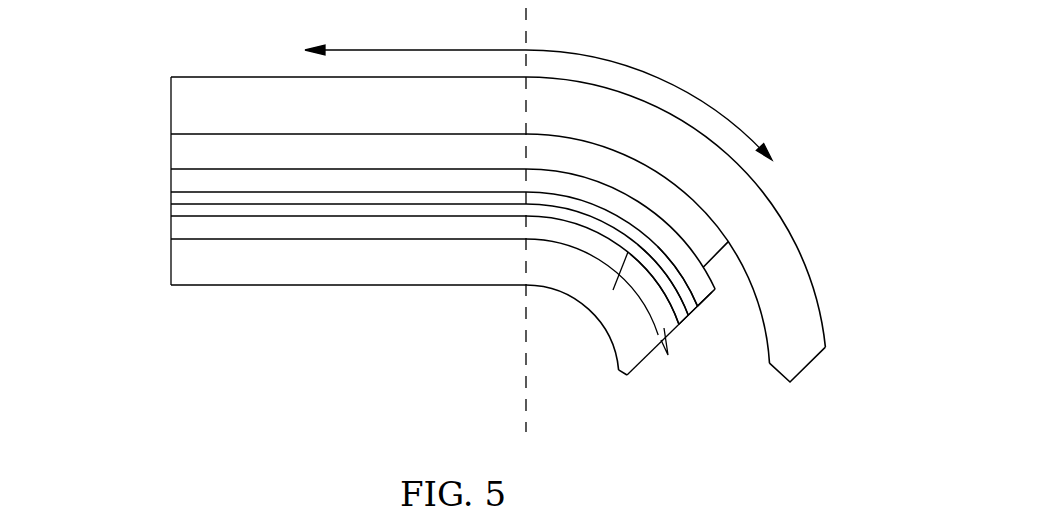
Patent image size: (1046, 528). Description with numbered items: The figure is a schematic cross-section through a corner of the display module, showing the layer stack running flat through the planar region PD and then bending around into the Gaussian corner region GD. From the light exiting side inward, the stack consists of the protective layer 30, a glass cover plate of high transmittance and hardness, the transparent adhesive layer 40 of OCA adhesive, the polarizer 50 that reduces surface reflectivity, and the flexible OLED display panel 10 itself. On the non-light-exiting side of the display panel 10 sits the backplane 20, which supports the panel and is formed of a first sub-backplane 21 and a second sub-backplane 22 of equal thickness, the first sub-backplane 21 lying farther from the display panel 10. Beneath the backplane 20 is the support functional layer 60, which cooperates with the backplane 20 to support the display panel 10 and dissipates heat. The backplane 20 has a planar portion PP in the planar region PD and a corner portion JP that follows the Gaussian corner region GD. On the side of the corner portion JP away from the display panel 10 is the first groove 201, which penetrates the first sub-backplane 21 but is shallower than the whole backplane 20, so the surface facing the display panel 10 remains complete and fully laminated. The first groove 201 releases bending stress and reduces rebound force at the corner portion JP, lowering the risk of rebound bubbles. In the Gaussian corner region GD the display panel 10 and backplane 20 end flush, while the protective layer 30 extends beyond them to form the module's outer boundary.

The display panel 10 is at (190, 201).
The backplane 20 is at (740, 398).
The first sub-backplane 21 is at (673, 318).
The second sub-backplane 22 is at (690, 323).
The protective layer 30 is at (218, 110).
The transparent adhesive layer 40 is at (218, 162).
The polarizer 50 is at (218, 188).
The support functional layer 60 is at (218, 267).
The first groove 201 is at (618, 273).
The planar portion PP is at (320, 223).
The corner portion JP is at (566, 237).
The planar region PD is at (536, 87).
The Gaussian corner region GD is at (764, 132).